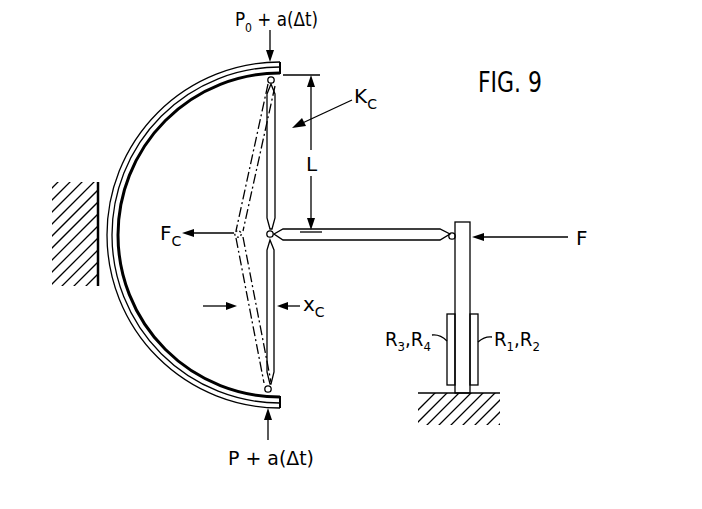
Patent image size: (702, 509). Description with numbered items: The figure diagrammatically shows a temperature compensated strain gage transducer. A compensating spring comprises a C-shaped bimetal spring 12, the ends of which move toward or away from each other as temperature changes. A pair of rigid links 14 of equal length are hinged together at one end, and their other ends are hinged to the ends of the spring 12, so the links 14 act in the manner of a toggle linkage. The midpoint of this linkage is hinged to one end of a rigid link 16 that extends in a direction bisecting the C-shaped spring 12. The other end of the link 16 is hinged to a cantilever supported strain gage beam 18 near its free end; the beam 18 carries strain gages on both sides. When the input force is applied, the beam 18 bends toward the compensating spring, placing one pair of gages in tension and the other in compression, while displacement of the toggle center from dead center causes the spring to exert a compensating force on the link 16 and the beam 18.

The C-shaped bimetal spring 12 is at (147, 114).
The rigid links 14 is at (277, 186).
The rigid link 16 is at (370, 211).
The strain gage beam 18 is at (472, 288).